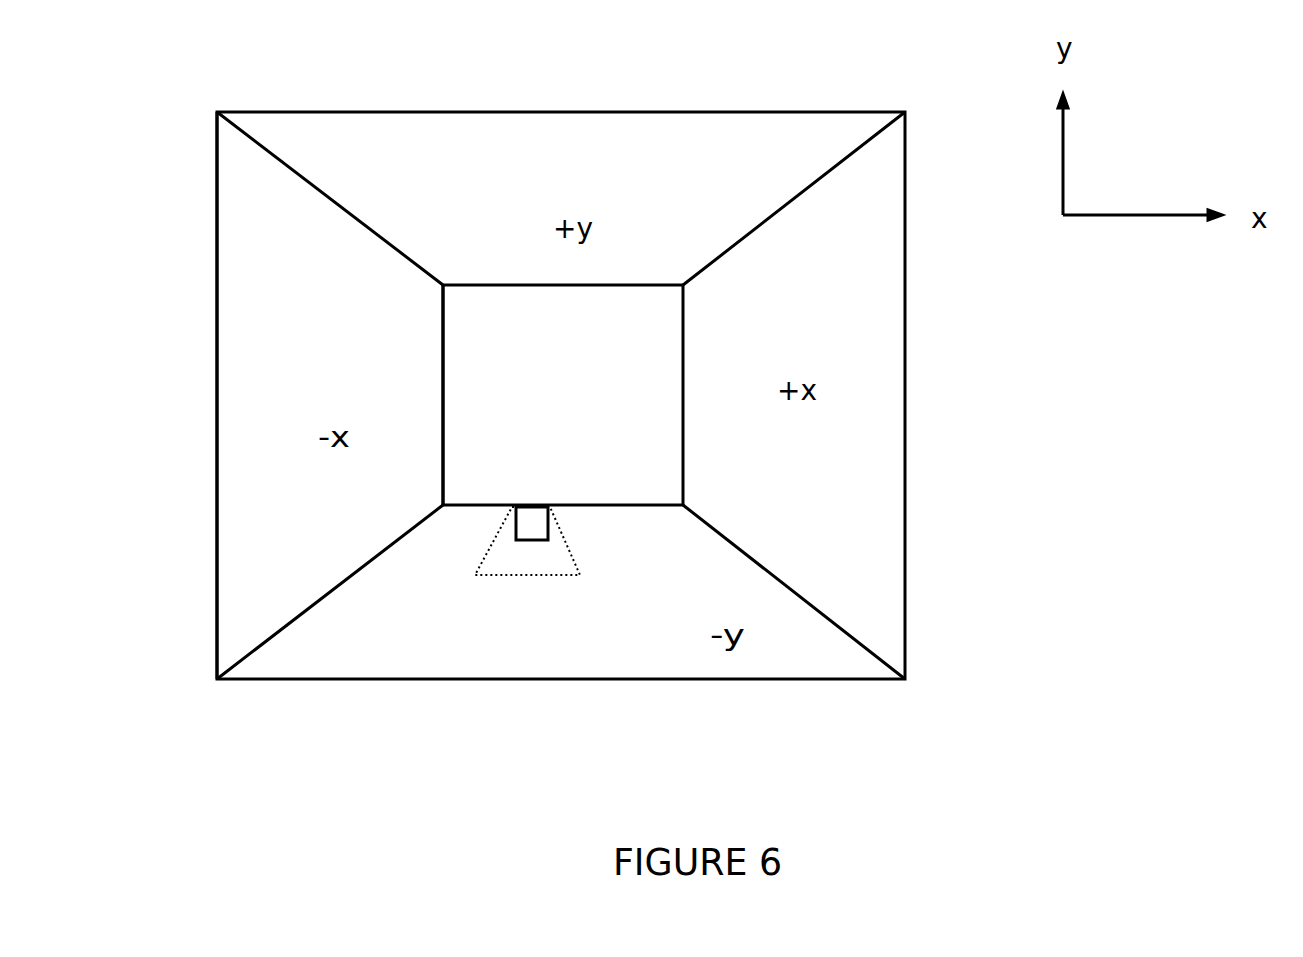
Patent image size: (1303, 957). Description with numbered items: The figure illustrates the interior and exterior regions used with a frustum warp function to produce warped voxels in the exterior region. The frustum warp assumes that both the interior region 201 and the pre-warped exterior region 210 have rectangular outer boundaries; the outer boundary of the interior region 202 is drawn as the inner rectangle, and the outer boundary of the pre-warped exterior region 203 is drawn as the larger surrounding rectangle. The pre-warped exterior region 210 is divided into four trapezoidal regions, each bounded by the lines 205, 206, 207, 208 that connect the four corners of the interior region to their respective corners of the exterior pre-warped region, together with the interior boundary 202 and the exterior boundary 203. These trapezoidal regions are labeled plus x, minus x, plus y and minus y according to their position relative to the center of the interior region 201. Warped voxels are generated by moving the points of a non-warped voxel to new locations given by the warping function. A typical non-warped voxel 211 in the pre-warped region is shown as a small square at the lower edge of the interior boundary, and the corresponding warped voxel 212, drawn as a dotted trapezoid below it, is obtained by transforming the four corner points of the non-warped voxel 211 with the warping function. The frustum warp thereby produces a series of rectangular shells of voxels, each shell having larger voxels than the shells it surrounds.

The interior region 201 is at (597, 412).
The outer boundary of the interior region 202 is at (442, 365).
The outer boundary of the pre-warped exterior region 203 is at (216, 318).
The line connecting corners 205 is at (335, 202).
The line connecting corners 206 is at (760, 225).
The line connecting corners 207 is at (767, 570).
The line connecting corners 208 is at (323, 598).
The pre-warped exterior region 210 is at (522, 167).
The non-warped voxel 211 is at (528, 520).
The warped voxel 212 is at (570, 552).